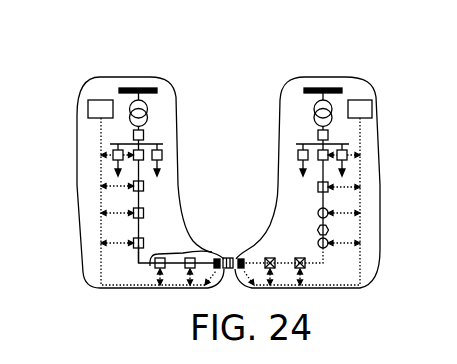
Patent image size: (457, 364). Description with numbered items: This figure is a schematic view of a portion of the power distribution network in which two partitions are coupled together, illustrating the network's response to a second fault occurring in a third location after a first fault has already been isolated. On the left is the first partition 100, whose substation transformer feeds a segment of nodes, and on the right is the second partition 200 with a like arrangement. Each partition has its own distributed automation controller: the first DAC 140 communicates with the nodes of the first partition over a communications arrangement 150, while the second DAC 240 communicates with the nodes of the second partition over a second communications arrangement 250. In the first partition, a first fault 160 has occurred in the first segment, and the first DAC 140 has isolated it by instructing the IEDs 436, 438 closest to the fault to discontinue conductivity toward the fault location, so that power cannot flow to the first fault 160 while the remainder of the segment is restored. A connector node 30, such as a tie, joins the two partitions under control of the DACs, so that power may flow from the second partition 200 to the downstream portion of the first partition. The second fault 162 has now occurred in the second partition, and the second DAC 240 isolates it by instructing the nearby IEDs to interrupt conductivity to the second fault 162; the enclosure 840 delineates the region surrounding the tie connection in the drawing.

The first partition 100 is at (113, 79).
The distributed automation controller 140 is at (98, 105).
The communications arrangement 150 is at (107, 143).
The IED 436 is at (132, 245).
The first fault 160 is at (140, 265).
The IED 438 is at (158, 269).
The connection enclosure 840 is at (183, 253).
The connector node 30 is at (230, 258).
The second partition 200 is at (367, 85).
The distributed automation controller 240 is at (372, 103).
The communications arrangement 250 is at (362, 135).
The second fault 162 is at (326, 229).